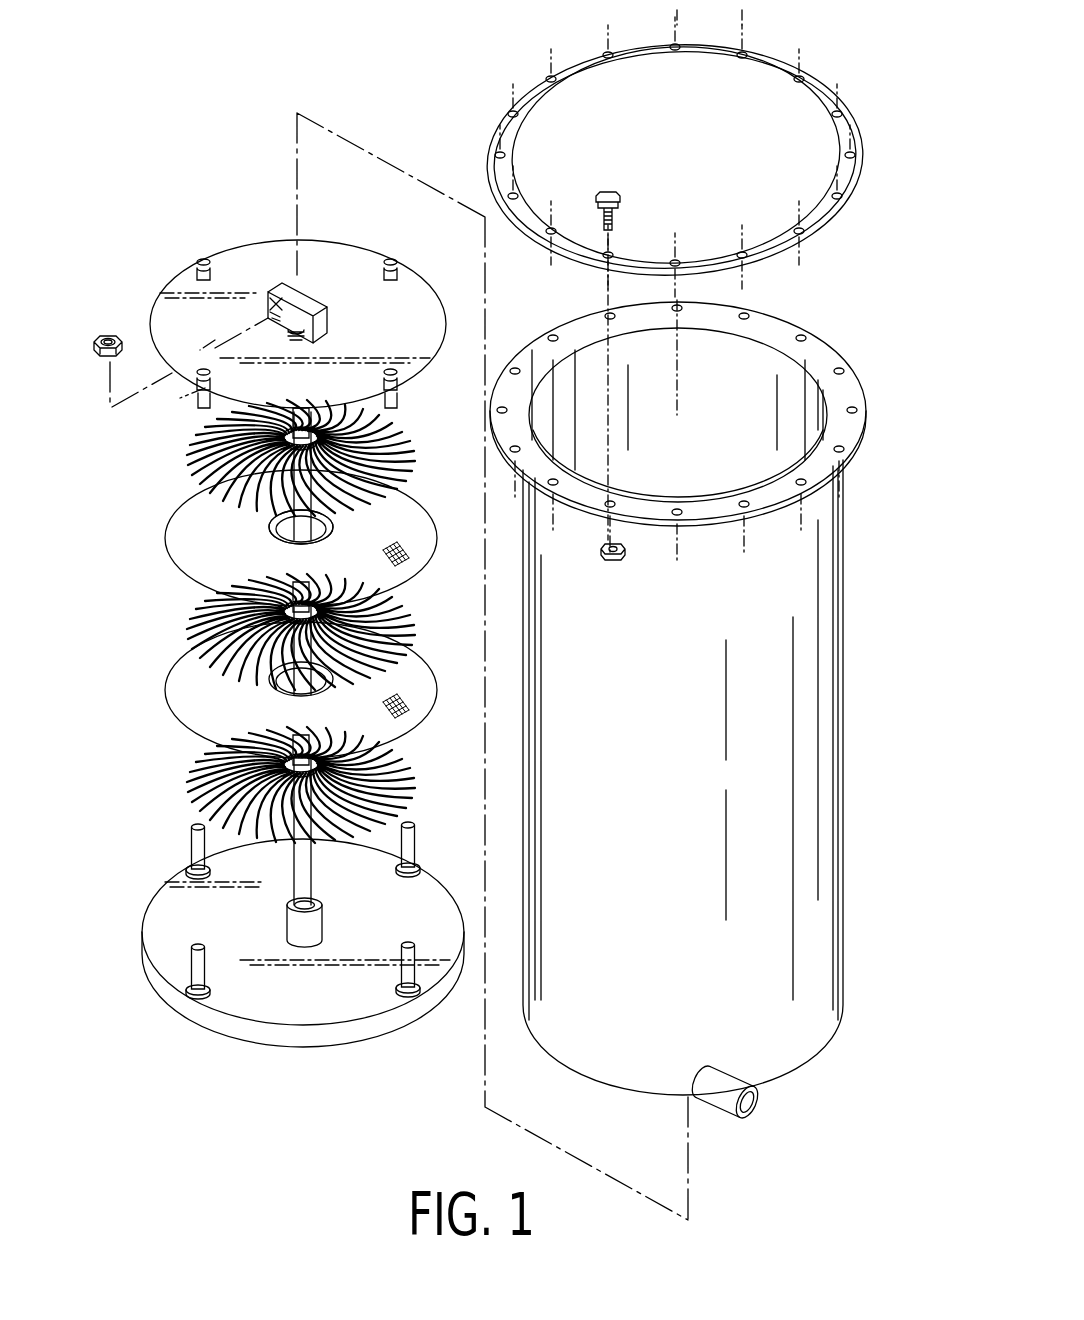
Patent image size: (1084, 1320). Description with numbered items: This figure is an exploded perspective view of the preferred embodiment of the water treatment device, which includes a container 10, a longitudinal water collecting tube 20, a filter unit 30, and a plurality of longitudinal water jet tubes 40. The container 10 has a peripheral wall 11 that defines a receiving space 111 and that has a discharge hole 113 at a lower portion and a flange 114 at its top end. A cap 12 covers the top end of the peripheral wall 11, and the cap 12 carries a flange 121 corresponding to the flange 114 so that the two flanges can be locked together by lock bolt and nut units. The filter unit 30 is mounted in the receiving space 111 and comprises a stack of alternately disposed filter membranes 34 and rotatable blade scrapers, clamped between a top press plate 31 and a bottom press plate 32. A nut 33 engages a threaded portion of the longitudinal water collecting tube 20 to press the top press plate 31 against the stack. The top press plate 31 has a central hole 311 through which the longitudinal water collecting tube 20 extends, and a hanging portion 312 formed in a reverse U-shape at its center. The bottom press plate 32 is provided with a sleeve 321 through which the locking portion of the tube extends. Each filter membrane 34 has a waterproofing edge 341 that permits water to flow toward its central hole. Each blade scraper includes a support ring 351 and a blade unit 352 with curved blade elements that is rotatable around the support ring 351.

The container 10 is at (715, 751).
The peripheral wall 11 is at (820, 810).
The receiving space 111 is at (753, 357).
The discharge hole 113 is at (722, 1103).
The flange 114 is at (828, 348).
The cap 12 is at (708, 144).
The flange 121 is at (847, 125).
The longitudinal water collecting tube 20 is at (288, 906).
The filter unit 30 is at (273, 611).
The top press plate 31 is at (298, 293).
The central hole 311 is at (268, 318).
The hanging portion 312 is at (318, 305).
The bottom press plate 32 is at (273, 973).
The sleeve 321 is at (296, 937).
The nut 33 is at (105, 336).
The filter membrane 34 is at (256, 609).
The waterproofing edge 341 is at (180, 490).
The support ring 351 is at (261, 621).
The blade unit 352 is at (235, 450).
The longitudinal water jet tube 40 is at (189, 849).